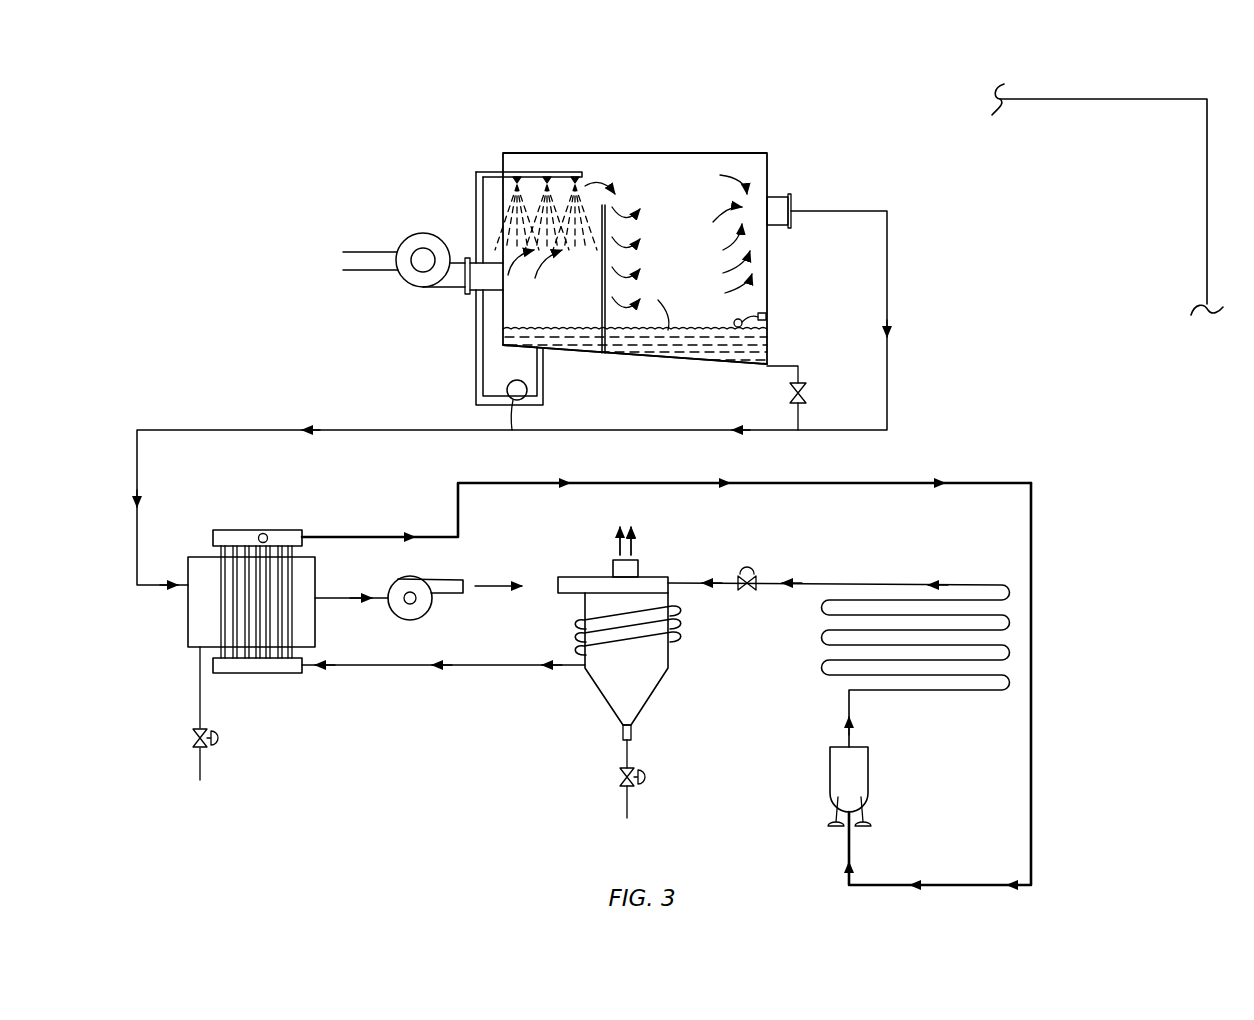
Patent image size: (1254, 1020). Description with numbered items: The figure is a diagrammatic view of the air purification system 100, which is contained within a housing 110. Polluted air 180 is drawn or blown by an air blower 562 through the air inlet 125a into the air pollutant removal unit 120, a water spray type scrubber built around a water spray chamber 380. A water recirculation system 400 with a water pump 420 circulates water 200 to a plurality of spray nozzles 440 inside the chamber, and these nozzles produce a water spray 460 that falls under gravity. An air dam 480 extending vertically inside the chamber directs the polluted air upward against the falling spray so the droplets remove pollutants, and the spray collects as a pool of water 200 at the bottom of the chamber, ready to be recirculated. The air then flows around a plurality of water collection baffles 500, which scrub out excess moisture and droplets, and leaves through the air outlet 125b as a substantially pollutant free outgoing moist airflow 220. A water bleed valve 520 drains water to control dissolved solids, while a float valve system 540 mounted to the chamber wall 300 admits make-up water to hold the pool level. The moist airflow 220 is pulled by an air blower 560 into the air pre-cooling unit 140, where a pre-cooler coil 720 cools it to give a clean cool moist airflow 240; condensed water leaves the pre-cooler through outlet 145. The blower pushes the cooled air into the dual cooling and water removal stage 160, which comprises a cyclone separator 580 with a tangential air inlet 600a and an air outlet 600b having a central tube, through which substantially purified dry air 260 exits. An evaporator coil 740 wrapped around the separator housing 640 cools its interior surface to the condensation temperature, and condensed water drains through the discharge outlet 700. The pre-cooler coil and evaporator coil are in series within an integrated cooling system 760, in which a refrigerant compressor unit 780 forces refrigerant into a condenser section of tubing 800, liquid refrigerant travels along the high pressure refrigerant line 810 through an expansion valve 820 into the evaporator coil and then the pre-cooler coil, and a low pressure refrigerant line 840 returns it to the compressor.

The air purification system 100 is at (205, 190).
The housing 110 is at (1131, 99).
The air pollutant removal unit 120 is at (423, 123).
The air inlet 125a is at (353, 273).
The air outlet 125b is at (785, 228).
The air pre-cooling unit 140 is at (220, 673).
The outlet 145 is at (228, 757).
The dual cooling and water removal stage 160 is at (532, 691).
The polluted air 180 is at (320, 260).
The water 200 is at (580, 352).
The outgoing moist airflow 220 is at (941, 318).
The clean cool moist airflow 240 is at (371, 570).
The substantially purified dry air 260 is at (646, 511).
The scrubber housing wall 300 is at (493, 297).
The water spray chamber 380 is at (768, 178).
The water recirculation system 400 is at (475, 366).
The water pump 420 is at (516, 402).
The spray heads and/or nozzles 440 is at (562, 170).
The water spray 460 is at (510, 233).
The air dam 480 is at (600, 288).
The water collection baffles 500 is at (660, 353).
The water bleed valve 520 is at (806, 395).
The float valve system 540 is at (766, 317).
The air blower 560 is at (413, 579).
The air blower 562 is at (410, 234).
The cyclone separator 580 is at (647, 703).
The air inlet 600a is at (573, 577).
The air outlet 600b is at (640, 569).
The housing 640 is at (668, 647).
The condensed water discharge outlet 700 is at (616, 733).
The pre-cooler coil 720 is at (222, 650).
The evaporator coil 740 is at (672, 601).
The integrated cooling system 760 is at (1031, 825).
The refrigerant compressor unit 780 is at (830, 778).
The condenser section of tubing 800 is at (1002, 650).
The high pressure refrigerant line 810 is at (852, 583).
The expansion valve 820 is at (757, 566).
The low pressure refrigerant line 840 is at (917, 481).